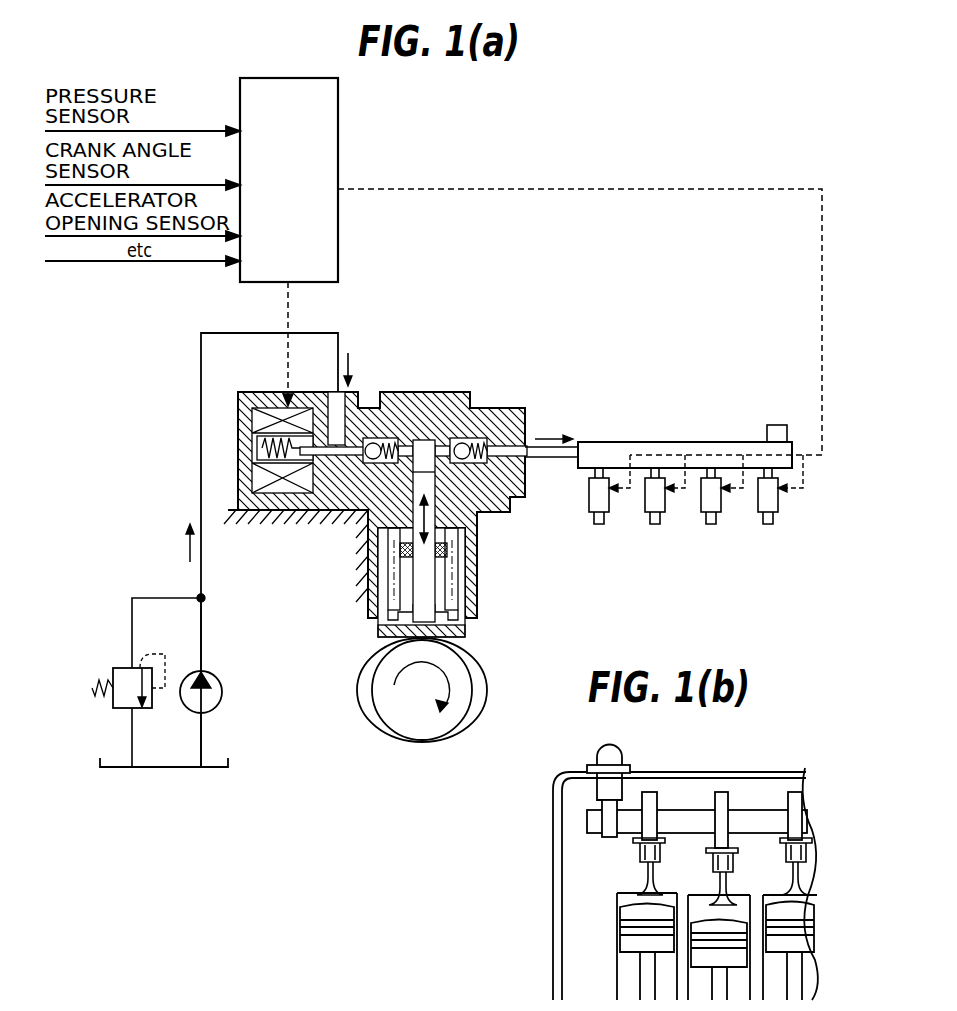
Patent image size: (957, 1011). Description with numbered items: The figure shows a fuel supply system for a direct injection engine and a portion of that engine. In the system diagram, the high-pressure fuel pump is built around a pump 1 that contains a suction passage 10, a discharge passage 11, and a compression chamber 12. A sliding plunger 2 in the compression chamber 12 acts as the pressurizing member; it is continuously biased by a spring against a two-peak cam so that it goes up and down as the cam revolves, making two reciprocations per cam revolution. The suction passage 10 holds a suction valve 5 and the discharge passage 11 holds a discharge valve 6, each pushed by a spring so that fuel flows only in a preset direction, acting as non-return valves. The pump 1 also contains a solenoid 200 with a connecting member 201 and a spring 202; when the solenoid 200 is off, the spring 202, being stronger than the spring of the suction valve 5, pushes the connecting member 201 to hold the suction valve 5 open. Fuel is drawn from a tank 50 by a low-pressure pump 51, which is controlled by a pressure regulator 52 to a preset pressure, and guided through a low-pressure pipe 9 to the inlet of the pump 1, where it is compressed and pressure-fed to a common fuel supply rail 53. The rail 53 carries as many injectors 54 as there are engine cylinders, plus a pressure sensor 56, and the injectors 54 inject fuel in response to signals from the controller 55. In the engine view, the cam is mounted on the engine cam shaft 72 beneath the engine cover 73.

The pump 1 is at (522, 498).
The plunger 2 is at (418, 597).
The suction valve 5 is at (366, 437).
The discharge valve 6 is at (466, 437).
The low-pressure pipe 9 is at (198, 484).
The suction passage 10 is at (333, 398).
The discharge passage 11 is at (551, 436).
The compression chamber 12 is at (426, 438).
The tank 50 is at (152, 772).
The low-pressure pump 51 is at (220, 707).
The pressure regulating valve 52 is at (126, 668).
The common fuel supply rail 53 is at (645, 442).
The injectors 54 is at (690, 527).
The controller 55 is at (338, 140).
The pressure sensor 56 is at (773, 425).
The solenoid 200 is at (266, 393).
The connecting member 201 is at (337, 458).
The spring 202 is at (258, 448).
The engine cam shaft 72 is at (757, 818).
The engine cover 73 is at (677, 772).